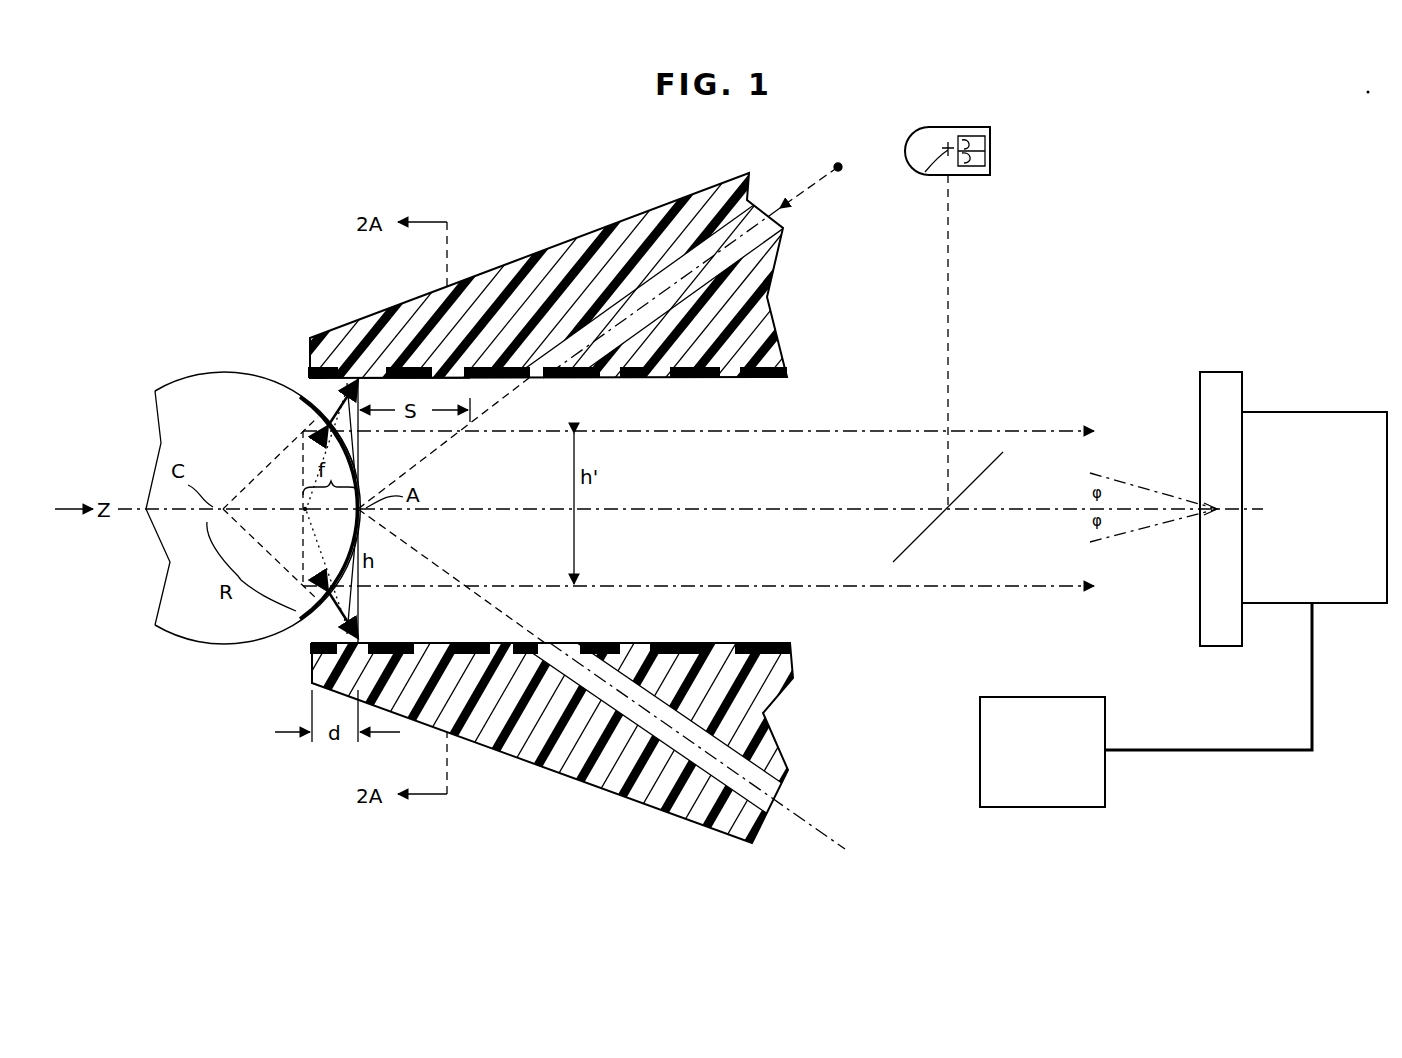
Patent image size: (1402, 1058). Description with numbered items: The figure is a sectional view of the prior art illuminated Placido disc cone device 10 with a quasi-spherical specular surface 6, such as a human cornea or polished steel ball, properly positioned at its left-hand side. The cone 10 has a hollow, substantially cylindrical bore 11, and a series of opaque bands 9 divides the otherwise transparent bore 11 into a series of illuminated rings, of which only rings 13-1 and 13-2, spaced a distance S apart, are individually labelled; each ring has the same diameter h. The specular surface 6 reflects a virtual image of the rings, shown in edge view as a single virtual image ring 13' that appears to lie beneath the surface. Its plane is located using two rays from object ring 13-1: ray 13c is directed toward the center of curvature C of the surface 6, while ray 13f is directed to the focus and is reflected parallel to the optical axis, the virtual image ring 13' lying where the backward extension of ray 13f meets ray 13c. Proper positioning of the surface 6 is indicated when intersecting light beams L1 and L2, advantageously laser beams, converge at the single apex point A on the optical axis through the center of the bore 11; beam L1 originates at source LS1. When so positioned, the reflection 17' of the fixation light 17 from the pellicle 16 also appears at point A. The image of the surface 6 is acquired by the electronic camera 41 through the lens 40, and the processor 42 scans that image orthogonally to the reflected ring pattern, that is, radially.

The quasi-spherical specular surface 6 is at (258, 644).
The opaque bands 9 is at (505, 379).
The illuminated Placido disc cone device 10 is at (526, 254).
The bore 11 is at (713, 480).
The illuminated ring 13-1 is at (309, 392).
The illuminated ring 13-2 is at (453, 379).
The ray directed to center of curvature 13c is at (298, 440).
The virtual image ring 13' is at (280, 508).
The ray directed to focus 13f is at (362, 395).
The pellicle 16 is at (913, 543).
The fixation light 17 is at (947, 318).
The reflection of fixation light 17' is at (327, 531).
The lens 40 is at (1208, 372).
The electronic camera 41 is at (1282, 412).
The processor 42 is at (1022, 697).
The light source 1 LS1 is at (836, 148).
The light beam L1 is at (793, 198).
The light beam L2 is at (800, 822).